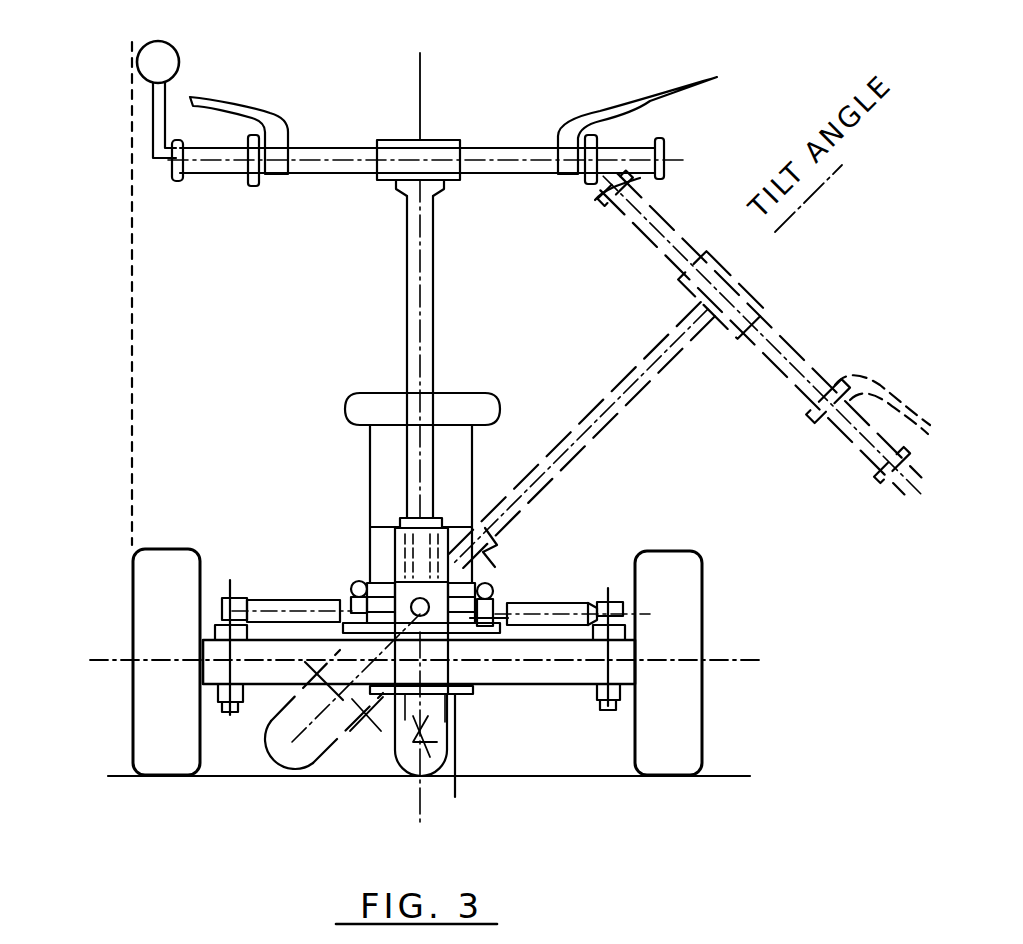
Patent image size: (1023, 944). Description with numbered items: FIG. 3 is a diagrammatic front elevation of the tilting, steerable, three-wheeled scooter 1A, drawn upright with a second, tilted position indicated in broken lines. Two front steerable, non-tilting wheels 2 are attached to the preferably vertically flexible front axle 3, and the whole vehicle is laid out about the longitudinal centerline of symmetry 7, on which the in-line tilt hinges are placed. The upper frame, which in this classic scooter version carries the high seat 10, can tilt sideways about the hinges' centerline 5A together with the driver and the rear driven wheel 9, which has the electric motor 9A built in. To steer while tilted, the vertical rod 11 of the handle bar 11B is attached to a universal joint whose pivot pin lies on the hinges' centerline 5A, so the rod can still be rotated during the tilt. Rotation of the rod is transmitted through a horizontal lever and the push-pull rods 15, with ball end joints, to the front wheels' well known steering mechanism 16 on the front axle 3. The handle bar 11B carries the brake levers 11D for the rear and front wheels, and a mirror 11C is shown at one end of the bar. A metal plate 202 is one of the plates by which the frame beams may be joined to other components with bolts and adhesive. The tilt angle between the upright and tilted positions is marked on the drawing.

The scooter 1A is at (596, 869).
The front steerable non-tilting wheels 2 is at (131, 597).
The front axle 3 is at (530, 692).
The hinges' centerline 5A is at (405, 590).
The longitudinal centerline of symmetry 7 is at (426, 88).
The rear driven wheel 9 is at (603, 507).
The electric motor 9A is at (396, 746).
The high seat 10 is at (460, 393).
The vertical rod 11 is at (405, 303).
The handle bar 11B is at (331, 145).
The rear view mirrors 11C is at (183, 52).
The brake levers 11D is at (652, 93).
The push-pull rods 15 is at (352, 583).
The steering mechanism 16 is at (550, 602).
The metal plate 202 is at (450, 732).